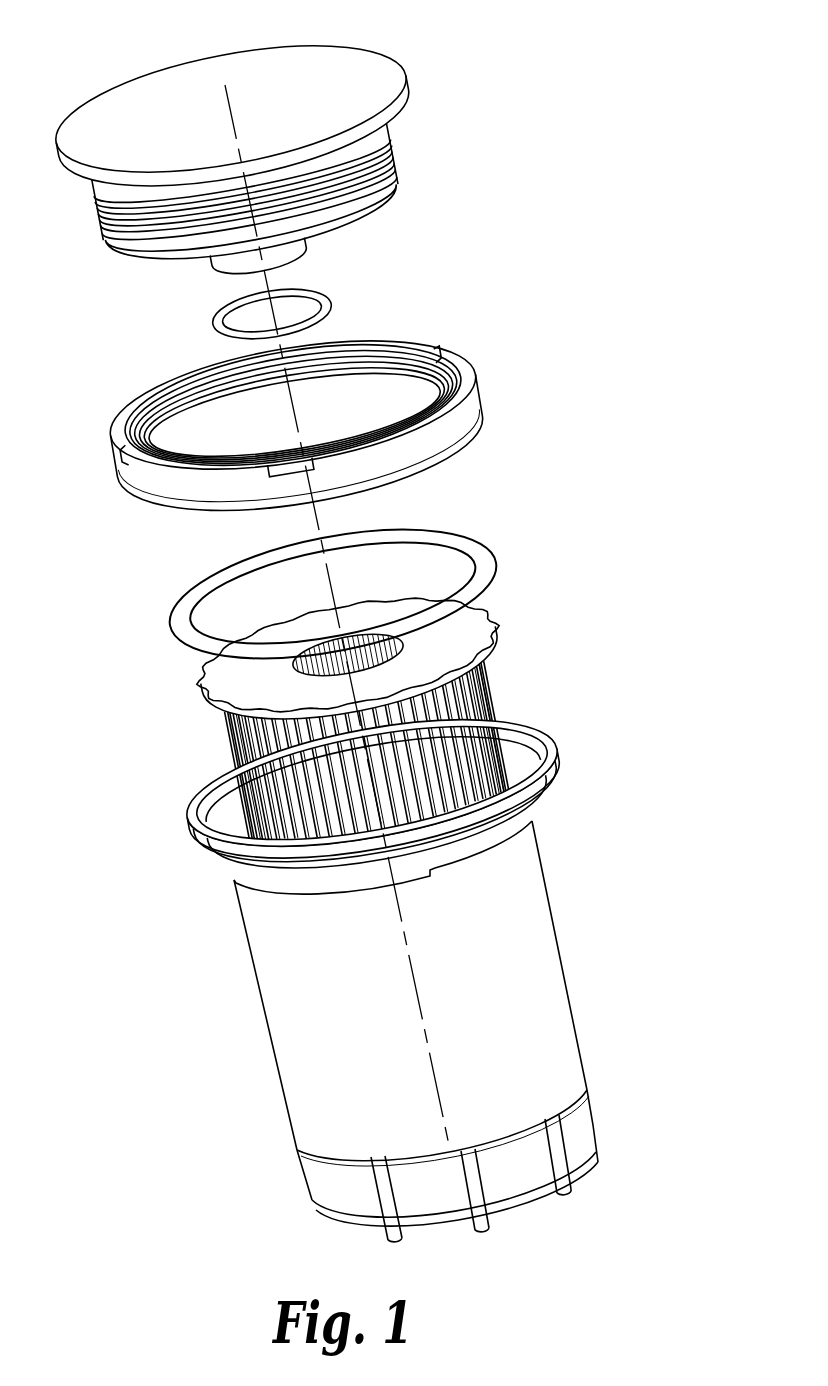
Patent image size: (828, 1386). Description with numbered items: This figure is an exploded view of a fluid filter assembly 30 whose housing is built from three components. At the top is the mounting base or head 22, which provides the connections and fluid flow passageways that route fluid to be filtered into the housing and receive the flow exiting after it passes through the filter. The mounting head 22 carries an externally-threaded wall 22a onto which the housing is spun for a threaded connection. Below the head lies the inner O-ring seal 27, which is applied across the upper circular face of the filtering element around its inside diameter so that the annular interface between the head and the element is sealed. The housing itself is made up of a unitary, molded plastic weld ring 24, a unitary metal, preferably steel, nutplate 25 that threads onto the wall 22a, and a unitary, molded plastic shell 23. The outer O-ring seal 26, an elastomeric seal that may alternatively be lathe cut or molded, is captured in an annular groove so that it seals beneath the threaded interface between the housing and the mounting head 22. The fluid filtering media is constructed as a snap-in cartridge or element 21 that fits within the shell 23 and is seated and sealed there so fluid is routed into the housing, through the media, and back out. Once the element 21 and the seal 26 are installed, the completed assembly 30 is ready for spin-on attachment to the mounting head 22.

The fluid filter assembly 30 is at (603, 318).
The mounting head 22 is at (273, 152).
The externally-threaded wall 22a is at (395, 157).
The inner O-ring seal 27 is at (333, 300).
The weld ring 24 is at (320, 400).
The nutplate 25 is at (397, 363).
The outer O-ring seal 26 is at (493, 568).
The fluid filtering element 21 is at (455, 730).
The shell 23 is at (530, 965).